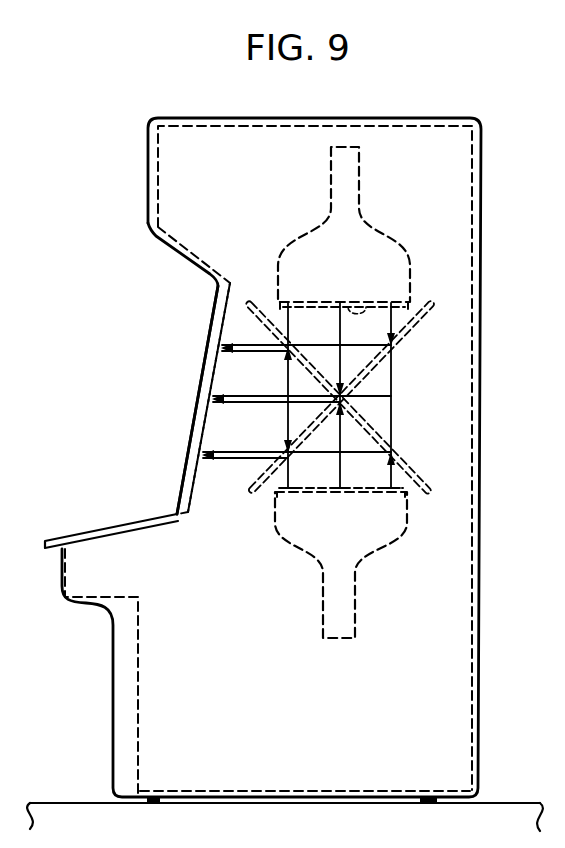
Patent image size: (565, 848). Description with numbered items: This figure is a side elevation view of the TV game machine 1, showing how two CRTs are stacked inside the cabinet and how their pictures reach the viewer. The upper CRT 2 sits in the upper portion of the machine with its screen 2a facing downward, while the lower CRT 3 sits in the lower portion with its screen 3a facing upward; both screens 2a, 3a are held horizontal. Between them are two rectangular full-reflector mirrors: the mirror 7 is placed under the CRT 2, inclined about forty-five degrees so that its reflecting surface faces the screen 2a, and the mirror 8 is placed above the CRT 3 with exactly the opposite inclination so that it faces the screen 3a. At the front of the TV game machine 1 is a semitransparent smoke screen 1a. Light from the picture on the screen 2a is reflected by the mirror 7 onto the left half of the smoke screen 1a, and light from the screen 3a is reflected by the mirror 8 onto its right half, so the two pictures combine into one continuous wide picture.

The TV game machine 1 is at (481, 185).
The smoke screen 1a is at (194, 420).
The CRT 2 is at (362, 209).
The screen 2a is at (358, 312).
The CRT 3 is at (320, 568).
The screen 3a is at (356, 486).
The mirror 7 is at (437, 307).
The mirror 8 is at (433, 488).